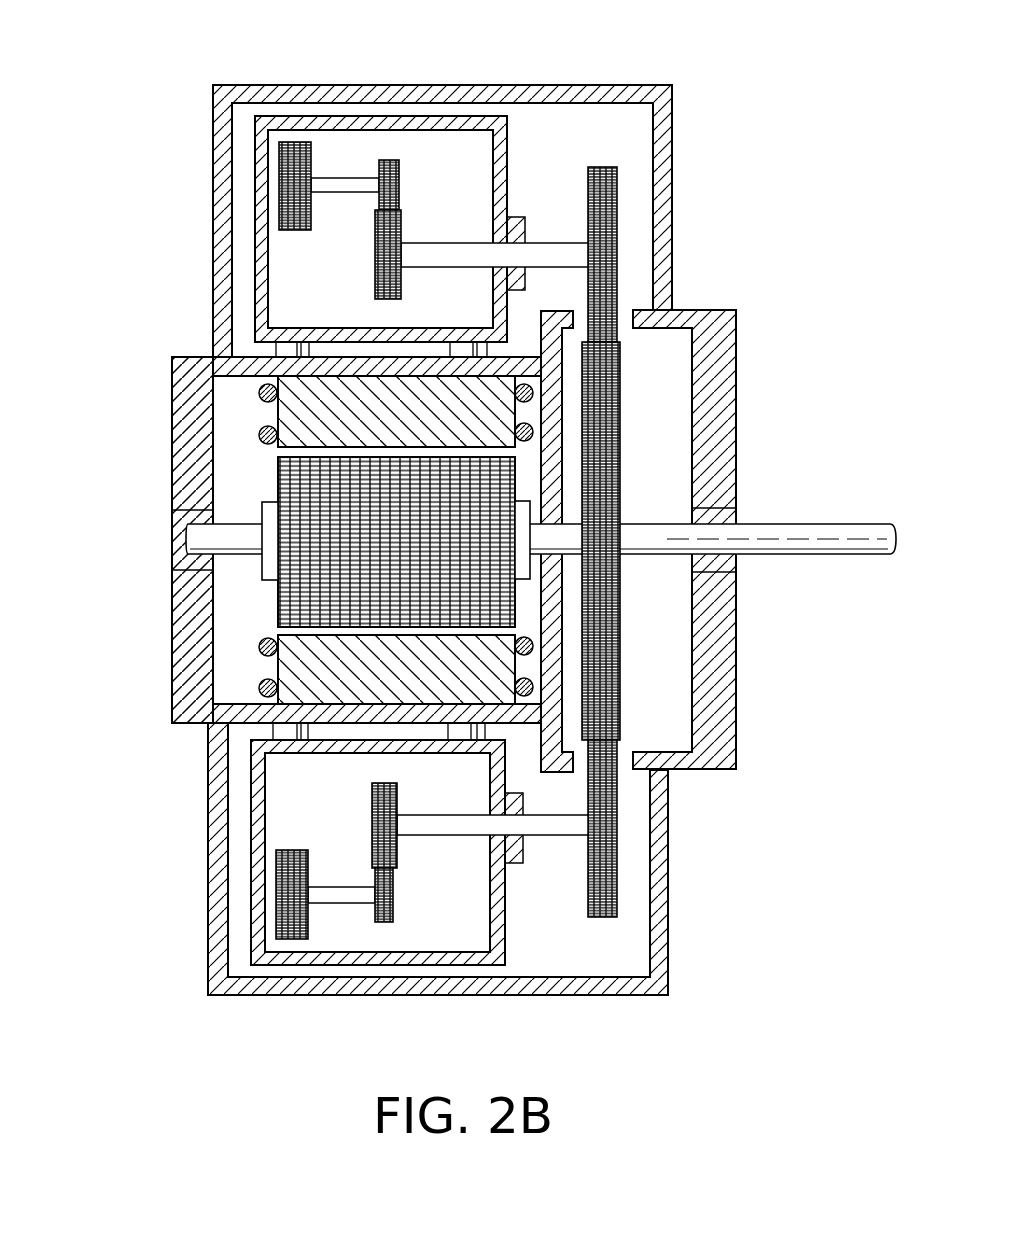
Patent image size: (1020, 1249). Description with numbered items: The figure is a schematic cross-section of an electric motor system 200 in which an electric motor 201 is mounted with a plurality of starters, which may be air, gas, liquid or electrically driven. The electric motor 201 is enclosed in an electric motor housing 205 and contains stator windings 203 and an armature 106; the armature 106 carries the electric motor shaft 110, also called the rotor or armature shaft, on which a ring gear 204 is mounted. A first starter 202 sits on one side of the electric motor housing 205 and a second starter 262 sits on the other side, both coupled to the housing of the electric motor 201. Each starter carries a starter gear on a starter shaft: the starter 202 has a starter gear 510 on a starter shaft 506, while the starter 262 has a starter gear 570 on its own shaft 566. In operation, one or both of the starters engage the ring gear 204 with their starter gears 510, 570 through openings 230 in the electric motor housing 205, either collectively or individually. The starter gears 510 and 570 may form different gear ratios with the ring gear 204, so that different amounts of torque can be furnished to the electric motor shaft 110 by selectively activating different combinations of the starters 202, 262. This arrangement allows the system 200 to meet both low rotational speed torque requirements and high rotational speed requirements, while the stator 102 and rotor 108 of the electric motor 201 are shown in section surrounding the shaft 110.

The electric motor system 200 is at (747, 152).
The electric motor 201 is at (145, 490).
The starter 202 is at (523, 142).
The stator windings 203 is at (260, 433).
The ring gear 204 is at (605, 410).
The electric motor housing 205 is at (172, 678).
The opening 230 is at (623, 315).
The starter 262 is at (520, 940).
The stator 102 is at (342, 397).
The armature 106 is at (265, 490).
The rotor 108 is at (278, 605).
The electric motor shaft 110 is at (793, 545).
The starter shaft 506 is at (560, 248).
The starter gear 510 is at (605, 232).
The lower gear train shaft 566 is at (558, 830).
The starter gear 570 is at (602, 848).